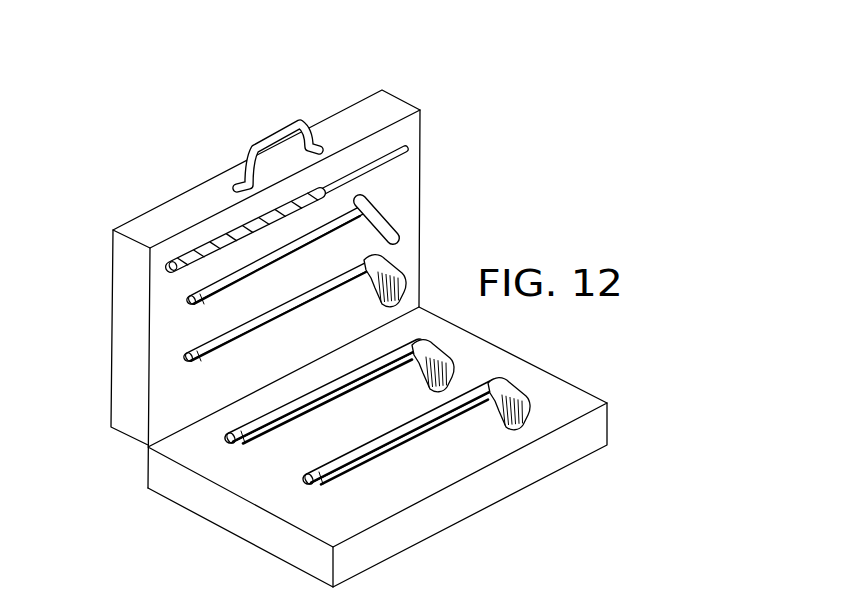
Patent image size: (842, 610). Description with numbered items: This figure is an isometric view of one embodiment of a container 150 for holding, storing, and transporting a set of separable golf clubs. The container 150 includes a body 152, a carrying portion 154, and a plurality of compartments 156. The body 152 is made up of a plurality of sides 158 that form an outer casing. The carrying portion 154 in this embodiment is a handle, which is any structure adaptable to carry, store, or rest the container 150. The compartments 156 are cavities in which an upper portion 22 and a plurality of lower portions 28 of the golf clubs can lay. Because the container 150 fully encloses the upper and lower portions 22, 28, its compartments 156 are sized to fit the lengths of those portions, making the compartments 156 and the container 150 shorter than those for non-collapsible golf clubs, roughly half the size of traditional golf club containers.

The container 150 is at (503, 165).
The body 152 is at (415, 447).
The carrying portion 154 is at (294, 128).
The compartments 156 is at (452, 360).
The sides 158 is at (178, 212).
The upper portion 22 is at (165, 268).
The lower portions 28 is at (187, 303).